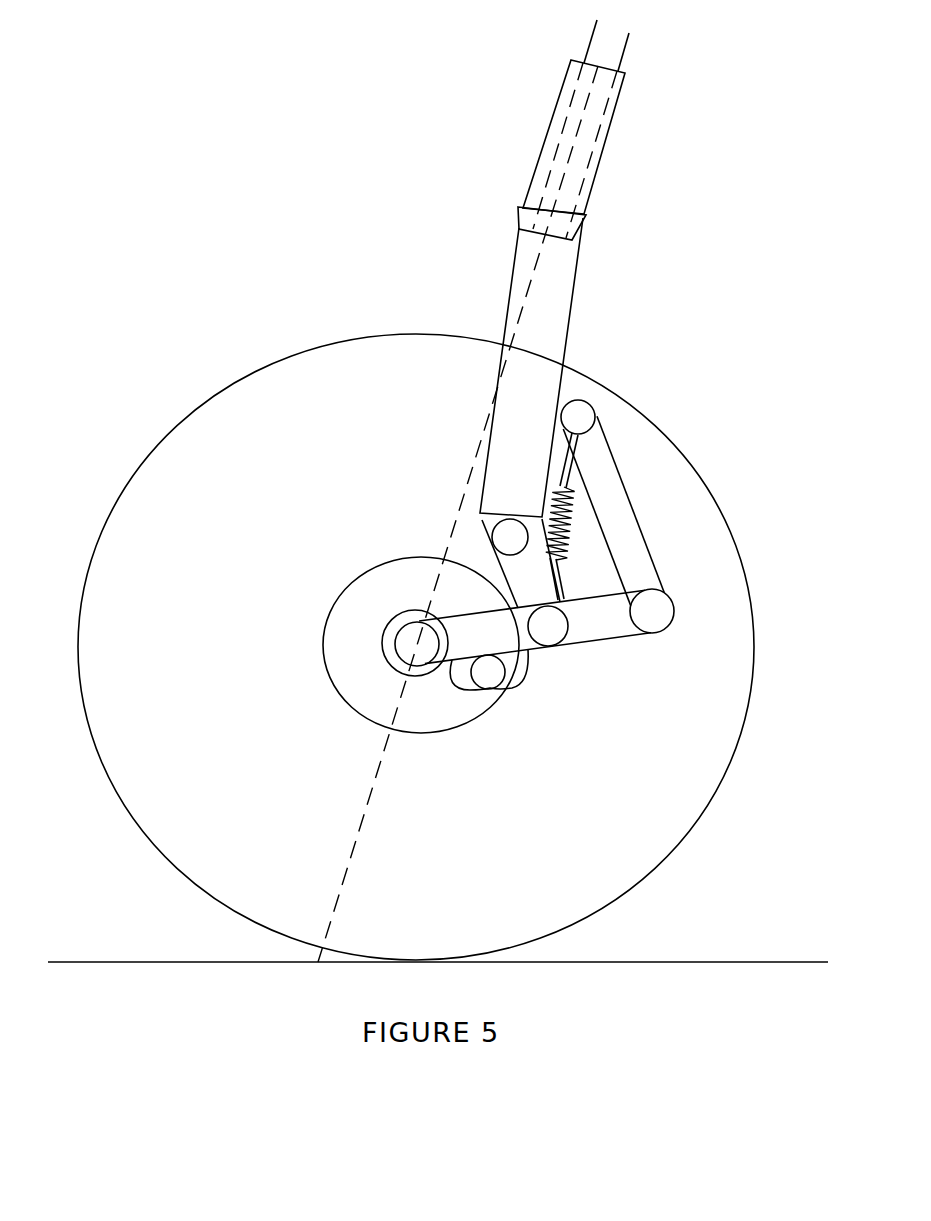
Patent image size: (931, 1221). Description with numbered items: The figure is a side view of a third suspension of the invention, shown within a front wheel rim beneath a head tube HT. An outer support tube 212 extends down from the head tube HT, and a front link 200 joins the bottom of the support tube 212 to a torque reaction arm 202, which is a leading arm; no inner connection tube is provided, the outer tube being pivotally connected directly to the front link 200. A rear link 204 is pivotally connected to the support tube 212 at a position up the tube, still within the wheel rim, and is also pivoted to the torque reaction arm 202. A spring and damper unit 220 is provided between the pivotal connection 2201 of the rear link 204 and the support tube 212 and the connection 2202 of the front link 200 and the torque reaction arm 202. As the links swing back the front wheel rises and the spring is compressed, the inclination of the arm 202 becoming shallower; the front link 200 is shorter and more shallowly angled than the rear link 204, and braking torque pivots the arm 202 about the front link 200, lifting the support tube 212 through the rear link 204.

The head tube HT is at (418, 78).
The outer support tube 212 is at (508, 287).
The front link 200 is at (497, 568).
The torque reaction arm 202 is at (622, 637).
The rear link 204 is at (635, 498).
The spring and damper unit 220 is at (572, 568).
The pivotal connection of the rear link and the support tube 2201 is at (590, 409).
The connection of the front link and the torque reaction arm 2202 is at (565, 642).